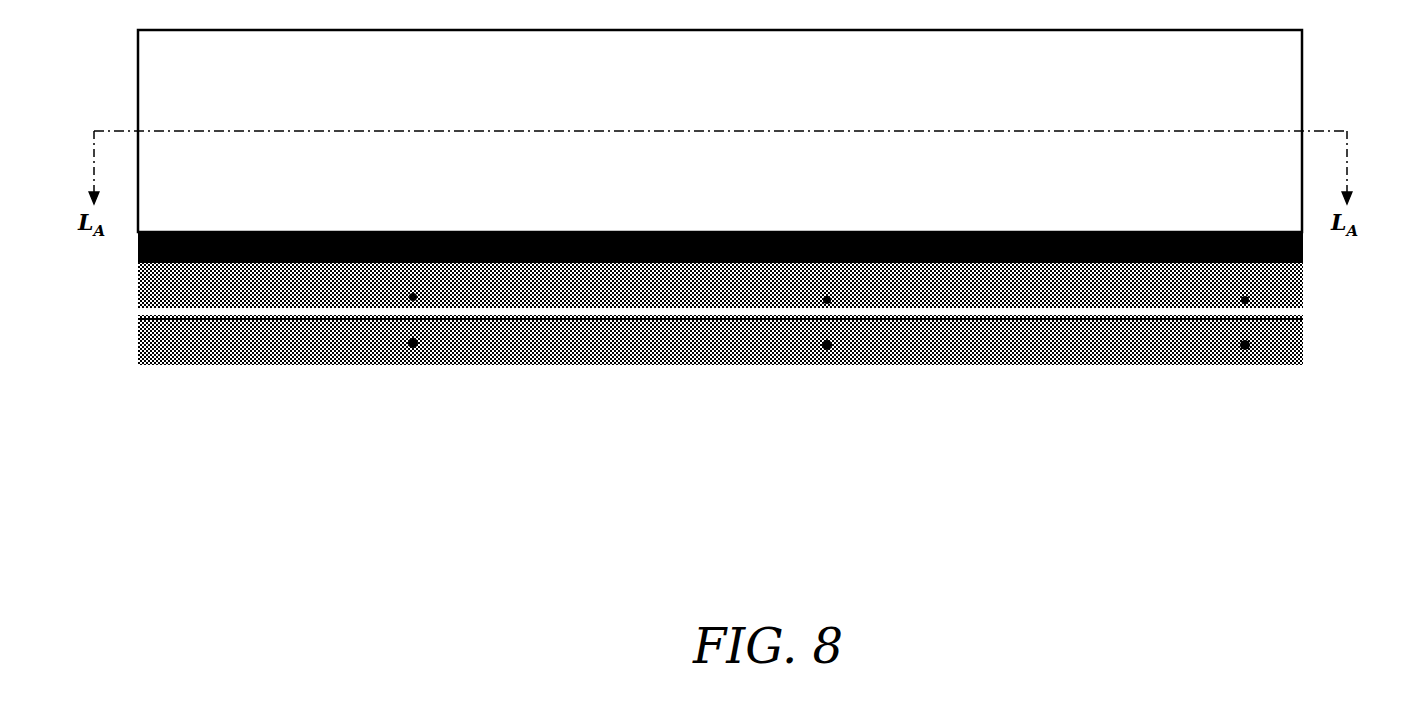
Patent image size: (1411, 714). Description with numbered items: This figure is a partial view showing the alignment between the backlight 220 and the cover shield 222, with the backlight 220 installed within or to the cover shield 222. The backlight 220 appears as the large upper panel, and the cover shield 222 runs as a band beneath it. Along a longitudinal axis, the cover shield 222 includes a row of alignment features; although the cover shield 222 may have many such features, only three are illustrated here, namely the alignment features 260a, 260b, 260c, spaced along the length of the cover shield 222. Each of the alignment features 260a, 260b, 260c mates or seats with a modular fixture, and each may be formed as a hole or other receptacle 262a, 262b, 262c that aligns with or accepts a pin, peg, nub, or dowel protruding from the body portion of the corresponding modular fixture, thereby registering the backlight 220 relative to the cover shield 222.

The backlight 220 is at (1302, 60).
The cover shield 222 is at (1303, 333).
The alignment feature 260a is at (417, 364).
The alignment feature 260b is at (827, 364).
The alignment feature 260c is at (1245, 364).
The receptacle 262a is at (417, 364).
The receptacle 262b is at (827, 364).
The receptacle 262c is at (1245, 364).